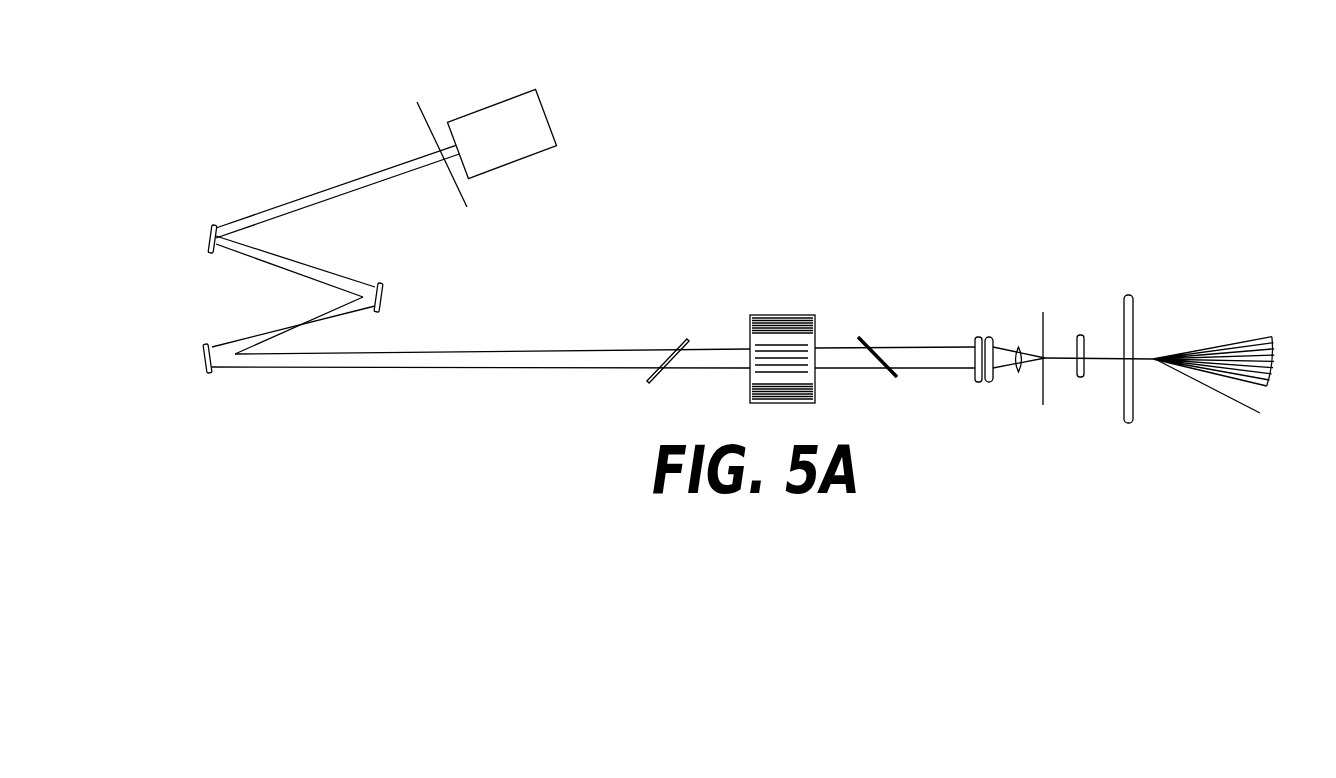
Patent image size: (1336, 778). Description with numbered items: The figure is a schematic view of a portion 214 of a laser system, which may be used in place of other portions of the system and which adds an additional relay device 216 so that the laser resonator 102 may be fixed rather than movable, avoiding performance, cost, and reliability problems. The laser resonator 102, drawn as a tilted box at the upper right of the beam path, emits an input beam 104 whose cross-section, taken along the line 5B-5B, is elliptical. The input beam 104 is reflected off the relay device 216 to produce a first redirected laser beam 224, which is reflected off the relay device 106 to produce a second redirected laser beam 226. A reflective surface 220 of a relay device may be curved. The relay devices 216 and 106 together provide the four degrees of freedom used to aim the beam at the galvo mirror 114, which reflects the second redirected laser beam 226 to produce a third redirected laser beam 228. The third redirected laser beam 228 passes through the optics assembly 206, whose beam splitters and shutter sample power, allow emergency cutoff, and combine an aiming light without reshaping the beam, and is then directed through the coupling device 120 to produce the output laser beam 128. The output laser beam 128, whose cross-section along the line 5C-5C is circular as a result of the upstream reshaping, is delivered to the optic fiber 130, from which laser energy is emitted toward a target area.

The laser resonator 102 is at (518, 146).
The input beam 104 is at (353, 178).
The relay device 106 is at (381, 271).
The galvo mirror 114 is at (207, 378).
The coupling device 120 is at (990, 330).
The output laser beam 128 is at (1002, 373).
The optic fiber 130 is at (1053, 343).
The optics assembly 206 is at (790, 312).
The portion of laser system 214 is at (787, 142).
The relay device 216 is at (209, 221).
The reflective surface 220 is at (217, 225).
The first redirected laser beam 224 is at (305, 260).
The second redirected laser beam 226 is at (288, 325).
The third redirected laser beam 228 is at (385, 366).
The section line 5B- 5B is at (443, 157).
The section line 5C- 5C is at (1043, 361).